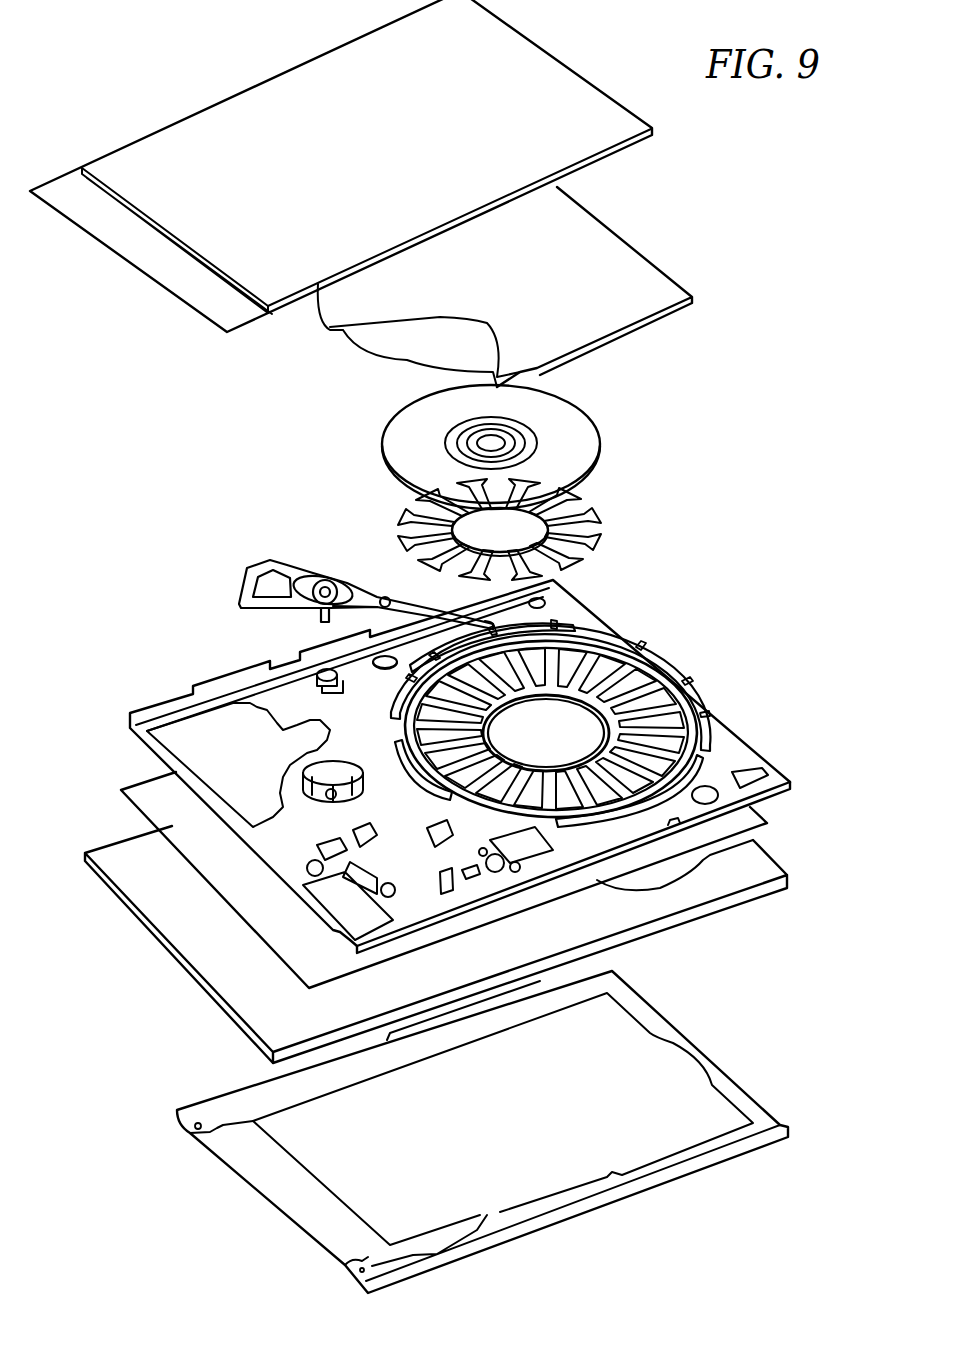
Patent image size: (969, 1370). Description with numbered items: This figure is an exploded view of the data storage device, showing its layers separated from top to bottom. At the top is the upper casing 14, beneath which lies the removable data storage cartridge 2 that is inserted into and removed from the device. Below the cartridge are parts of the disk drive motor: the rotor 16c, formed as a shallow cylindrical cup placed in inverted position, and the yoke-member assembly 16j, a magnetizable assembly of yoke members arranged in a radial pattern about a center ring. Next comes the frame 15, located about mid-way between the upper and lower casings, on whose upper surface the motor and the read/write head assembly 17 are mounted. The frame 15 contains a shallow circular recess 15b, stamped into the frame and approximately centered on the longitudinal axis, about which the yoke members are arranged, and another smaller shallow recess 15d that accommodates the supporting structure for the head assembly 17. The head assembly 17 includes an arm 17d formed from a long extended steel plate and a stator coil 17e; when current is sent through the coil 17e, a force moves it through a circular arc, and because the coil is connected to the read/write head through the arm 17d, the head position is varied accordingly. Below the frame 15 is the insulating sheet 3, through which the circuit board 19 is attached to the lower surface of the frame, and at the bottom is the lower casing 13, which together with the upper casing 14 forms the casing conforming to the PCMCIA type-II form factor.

The upper casing 14 is at (376, 157).
The removable data storage cartridge 2 is at (570, 282).
The rotor 16c is at (585, 440).
The yoke-member assembly 16j is at (600, 518).
The read/write head assembly 17 is at (323, 575).
The stator coil 17e is at (245, 583).
The arm 17d is at (417, 604).
The frame 15 is at (731, 740).
The recess 15b is at (640, 662).
The recess 15d is at (360, 796).
The insulating sheet 3 is at (319, 967).
The circuit board 19 is at (297, 1023).
The lower casing 13 is at (406, 1166).